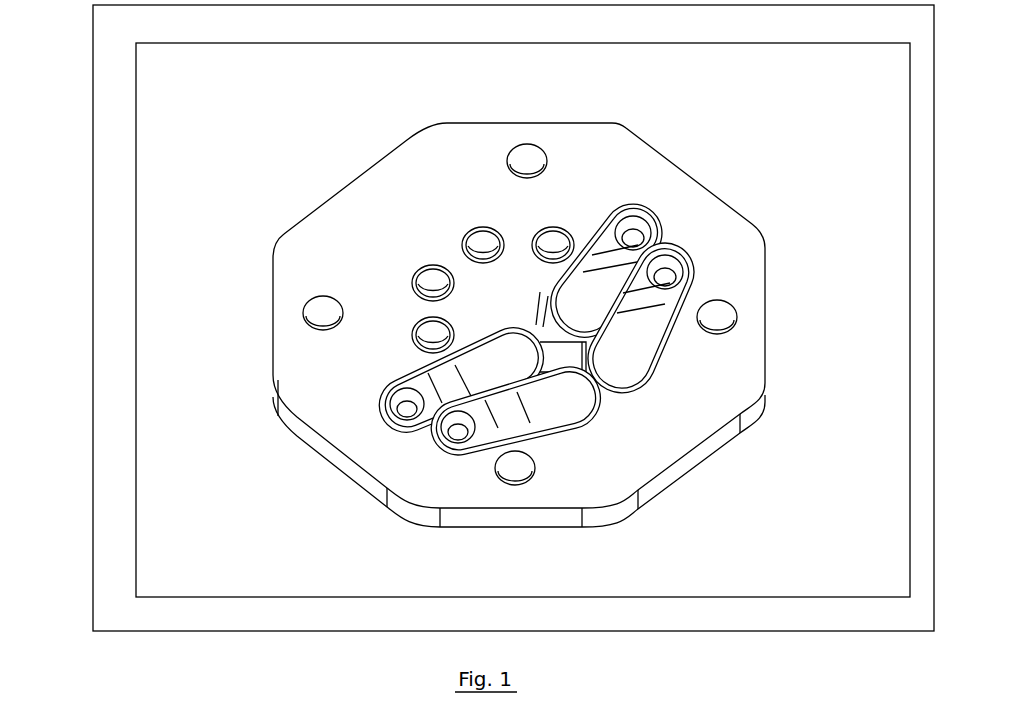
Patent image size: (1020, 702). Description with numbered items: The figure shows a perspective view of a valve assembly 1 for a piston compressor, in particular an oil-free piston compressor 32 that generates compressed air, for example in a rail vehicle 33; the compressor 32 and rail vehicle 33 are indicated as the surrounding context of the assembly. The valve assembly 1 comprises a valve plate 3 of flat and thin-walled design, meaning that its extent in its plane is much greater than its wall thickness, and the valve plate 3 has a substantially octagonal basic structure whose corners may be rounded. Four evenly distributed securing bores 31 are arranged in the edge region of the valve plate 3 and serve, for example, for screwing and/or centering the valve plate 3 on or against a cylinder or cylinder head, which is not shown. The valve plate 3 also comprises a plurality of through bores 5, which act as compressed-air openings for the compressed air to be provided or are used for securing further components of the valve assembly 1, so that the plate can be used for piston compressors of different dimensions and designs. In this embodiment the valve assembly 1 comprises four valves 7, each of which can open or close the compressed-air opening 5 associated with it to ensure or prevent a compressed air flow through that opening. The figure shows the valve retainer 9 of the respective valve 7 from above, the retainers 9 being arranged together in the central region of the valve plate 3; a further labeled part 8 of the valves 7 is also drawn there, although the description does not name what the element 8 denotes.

The valve assembly 1 is at (728, 148).
The valve plate 3 is at (353, 202).
The securing bores 31 is at (533, 147).
The oil-free piston compressor 32 is at (135, 93).
The rail vehicle 33 is at (93, 181).
The through bores 5 is at (415, 297).
The valves 7 is at (508, 313).
The upper boss 8 is at (581, 297).
The valve retainer 9 is at (496, 355).